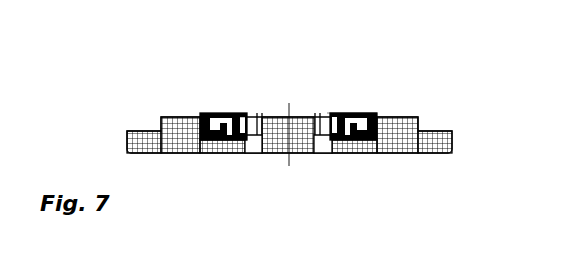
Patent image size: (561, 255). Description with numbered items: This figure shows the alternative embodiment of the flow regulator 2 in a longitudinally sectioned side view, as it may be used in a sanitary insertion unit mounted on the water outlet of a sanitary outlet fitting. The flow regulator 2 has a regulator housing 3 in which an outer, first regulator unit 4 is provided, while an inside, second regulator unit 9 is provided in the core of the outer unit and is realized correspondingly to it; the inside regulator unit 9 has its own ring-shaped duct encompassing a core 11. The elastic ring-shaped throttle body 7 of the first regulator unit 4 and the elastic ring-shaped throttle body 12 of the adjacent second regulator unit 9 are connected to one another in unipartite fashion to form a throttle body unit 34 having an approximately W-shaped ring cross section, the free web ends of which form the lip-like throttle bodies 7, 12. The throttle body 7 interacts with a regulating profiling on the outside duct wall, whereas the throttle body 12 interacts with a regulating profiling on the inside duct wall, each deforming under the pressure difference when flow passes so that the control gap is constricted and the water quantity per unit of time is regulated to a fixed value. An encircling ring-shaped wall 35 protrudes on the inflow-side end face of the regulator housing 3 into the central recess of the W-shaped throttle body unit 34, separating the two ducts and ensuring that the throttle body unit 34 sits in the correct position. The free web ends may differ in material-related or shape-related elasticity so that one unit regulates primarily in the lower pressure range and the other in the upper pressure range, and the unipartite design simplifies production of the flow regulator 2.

The flow regulator 2 is at (460, 96).
The regulator housing 3 is at (401, 142).
The first regulator unit 4 is at (382, 105).
The throttle body 7 is at (199, 128).
The inside regulator unit 9 is at (329, 106).
The core 11 is at (264, 114).
The throttle body 12 is at (326, 128).
The throttle body unit 34 is at (219, 111).
The ring-shaped wall 35 is at (220, 141).